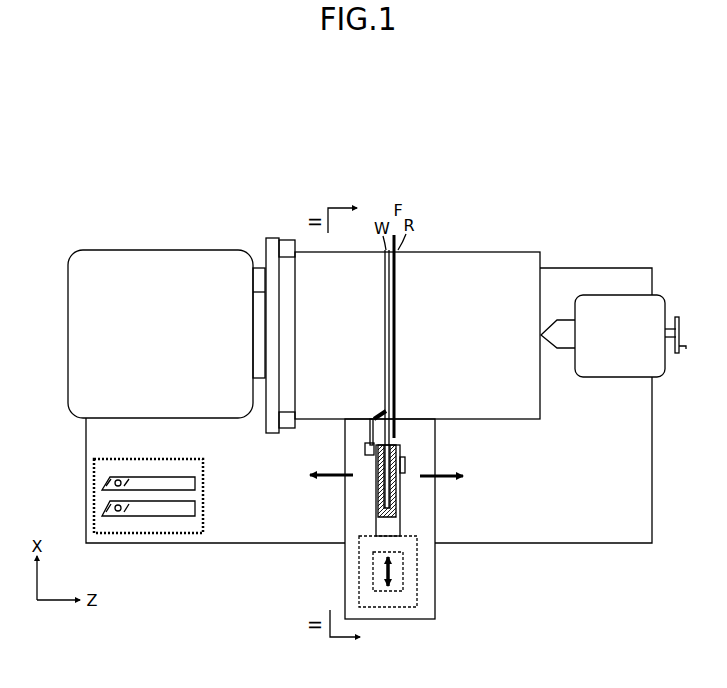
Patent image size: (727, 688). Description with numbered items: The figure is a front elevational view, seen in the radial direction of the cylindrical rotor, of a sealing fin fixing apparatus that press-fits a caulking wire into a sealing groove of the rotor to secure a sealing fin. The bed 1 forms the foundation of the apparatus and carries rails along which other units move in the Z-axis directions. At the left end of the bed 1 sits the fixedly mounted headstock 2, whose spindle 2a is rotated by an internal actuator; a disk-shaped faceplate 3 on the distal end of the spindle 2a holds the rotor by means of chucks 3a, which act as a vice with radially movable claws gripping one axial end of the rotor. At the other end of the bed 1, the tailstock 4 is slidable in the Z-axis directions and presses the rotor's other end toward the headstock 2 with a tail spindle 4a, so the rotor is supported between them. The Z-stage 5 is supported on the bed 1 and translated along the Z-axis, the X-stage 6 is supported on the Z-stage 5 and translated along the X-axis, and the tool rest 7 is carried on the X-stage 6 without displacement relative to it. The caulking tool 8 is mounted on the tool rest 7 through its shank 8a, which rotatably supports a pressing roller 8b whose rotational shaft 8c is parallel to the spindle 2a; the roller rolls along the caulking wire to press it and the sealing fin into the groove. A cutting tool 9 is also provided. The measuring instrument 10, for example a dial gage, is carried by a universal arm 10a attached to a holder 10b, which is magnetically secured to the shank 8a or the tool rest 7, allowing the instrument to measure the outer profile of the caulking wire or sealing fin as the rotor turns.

The bed 1 is at (652, 403).
The headstock 2 is at (68, 334).
The spindle 2a is at (259, 288).
The faceplate 3 is at (279, 335).
The chucks 3a is at (286, 240).
The tailstock 4 is at (620, 295).
The tail spindle 4a is at (568, 320).
The Z-stage 5 is at (435, 521).
The X-stage 6 is at (373, 572).
The tool rest 7 is at (417, 574).
The caulking tool 8 is at (371, 491).
The shank 8a is at (376, 520).
The pressing roller 8b is at (380, 490).
The rotational shaft 8c is at (406, 465).
The cutting tool 9 is at (155, 477).
The measuring instrument 10 is at (377, 414).
The universal arm 10a is at (370, 424).
The holder 10b is at (365, 449).